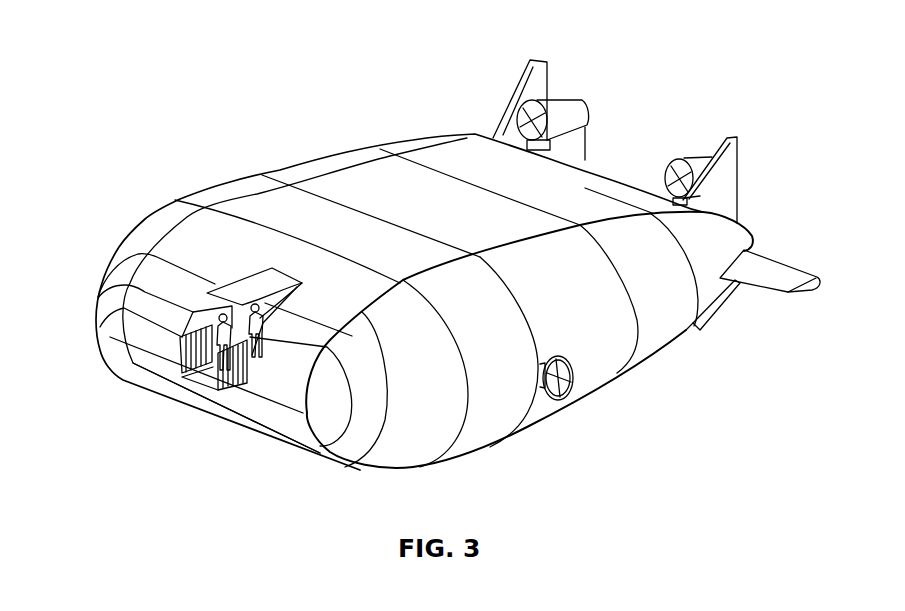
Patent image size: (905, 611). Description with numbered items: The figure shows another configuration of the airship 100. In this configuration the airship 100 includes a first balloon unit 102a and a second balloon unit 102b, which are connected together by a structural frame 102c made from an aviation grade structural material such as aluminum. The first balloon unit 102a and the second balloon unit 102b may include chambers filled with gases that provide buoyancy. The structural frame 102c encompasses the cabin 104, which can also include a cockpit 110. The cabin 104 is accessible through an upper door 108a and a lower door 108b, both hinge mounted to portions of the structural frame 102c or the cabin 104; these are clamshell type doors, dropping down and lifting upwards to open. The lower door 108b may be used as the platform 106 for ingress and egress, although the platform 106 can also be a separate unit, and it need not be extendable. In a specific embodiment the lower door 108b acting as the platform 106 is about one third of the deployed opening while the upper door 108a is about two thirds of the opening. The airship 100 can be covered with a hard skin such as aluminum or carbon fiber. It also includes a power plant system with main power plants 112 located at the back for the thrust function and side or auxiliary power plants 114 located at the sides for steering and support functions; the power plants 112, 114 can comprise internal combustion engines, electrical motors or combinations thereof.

The airship 100 is at (150, 48).
The first balloon unit 102a is at (305, 176).
The second balloon unit 102b is at (444, 447).
The structural frame 102c is at (285, 410).
The cabin 104 is at (285, 303).
The platform 106 is at (210, 378).
The upper door 108a is at (250, 283).
The lower door 108b is at (170, 370).
The cockpit 110 is at (113, 265).
The main power plant 112 is at (567, 97).
The auxiliary power plant 114 is at (577, 390).